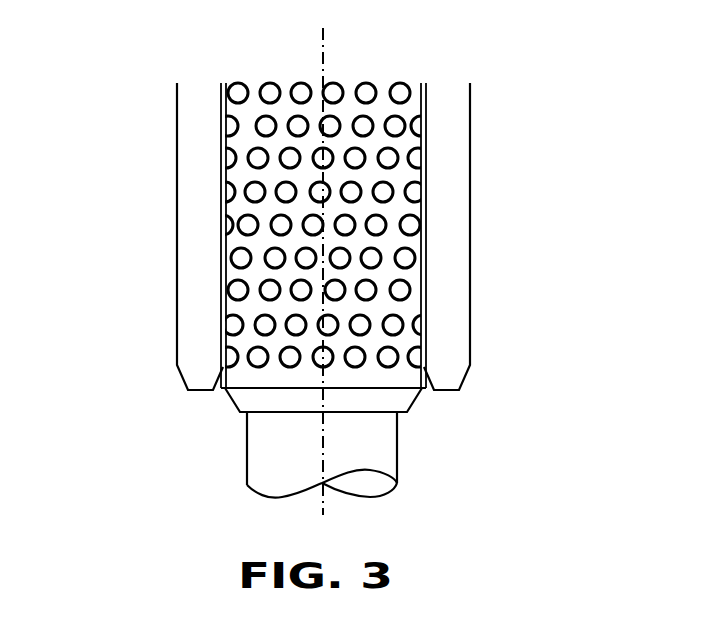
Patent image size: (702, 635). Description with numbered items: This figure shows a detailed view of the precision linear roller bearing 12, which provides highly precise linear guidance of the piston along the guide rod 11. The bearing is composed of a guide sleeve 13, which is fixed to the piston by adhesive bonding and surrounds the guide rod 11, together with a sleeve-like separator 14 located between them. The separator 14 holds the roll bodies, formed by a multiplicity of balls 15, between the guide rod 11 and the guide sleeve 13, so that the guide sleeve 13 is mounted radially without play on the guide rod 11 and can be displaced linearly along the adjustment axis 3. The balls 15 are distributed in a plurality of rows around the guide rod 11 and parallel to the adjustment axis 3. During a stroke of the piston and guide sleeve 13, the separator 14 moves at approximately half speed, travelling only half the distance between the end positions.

The adjustment axis 3 is at (322, 507).
The guide rod 11 is at (268, 432).
The precision linear roller bearing 12 is at (346, 290).
The guide sleeve 13 is at (197, 224).
The sleeve-like separator 14 is at (240, 235).
The balls 15 is at (256, 157).